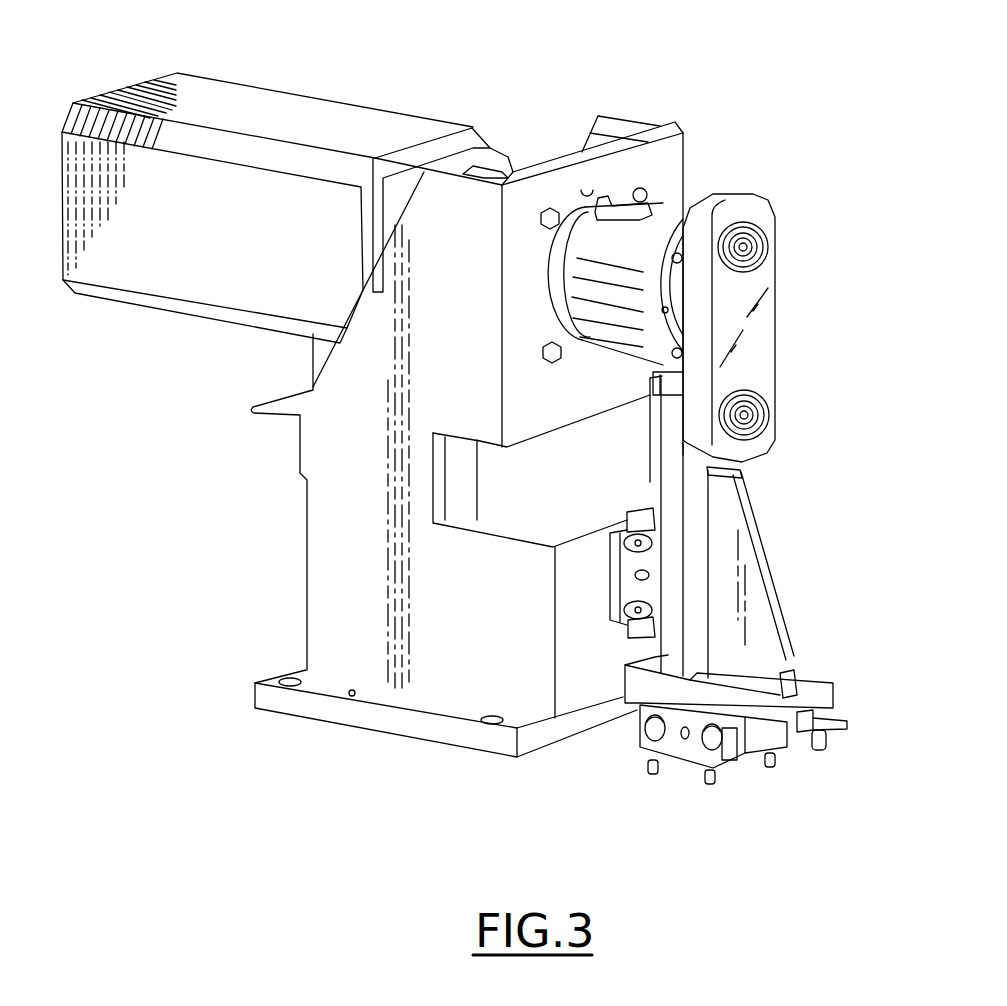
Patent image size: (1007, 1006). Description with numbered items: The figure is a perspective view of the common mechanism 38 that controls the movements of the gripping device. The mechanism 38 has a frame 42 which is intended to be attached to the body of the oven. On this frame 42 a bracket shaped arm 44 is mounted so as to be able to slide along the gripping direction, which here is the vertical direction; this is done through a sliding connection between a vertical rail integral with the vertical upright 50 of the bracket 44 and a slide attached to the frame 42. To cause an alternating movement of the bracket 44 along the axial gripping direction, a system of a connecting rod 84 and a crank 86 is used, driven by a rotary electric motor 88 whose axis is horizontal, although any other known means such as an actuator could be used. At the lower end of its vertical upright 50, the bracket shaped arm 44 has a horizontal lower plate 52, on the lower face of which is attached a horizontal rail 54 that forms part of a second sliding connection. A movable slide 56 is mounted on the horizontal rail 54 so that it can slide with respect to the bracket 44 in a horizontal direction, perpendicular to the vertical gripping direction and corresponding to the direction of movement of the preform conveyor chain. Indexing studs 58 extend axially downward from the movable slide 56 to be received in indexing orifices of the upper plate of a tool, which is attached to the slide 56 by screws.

The common mechanism 38 is at (258, 556).
The frame 42 is at (458, 675).
The bracket shaped arm 44 is at (779, 588).
The vertical upright 50 is at (700, 528).
The horizontal lower plate 52 is at (643, 685).
The horizontal rail 54 is at (802, 733).
The movable slide 56 is at (687, 762).
The indexing studs 58 is at (652, 767).
The connecting rod 84 is at (762, 343).
The crank 86 is at (665, 210).
The rotary electric motor 88 is at (299, 113).